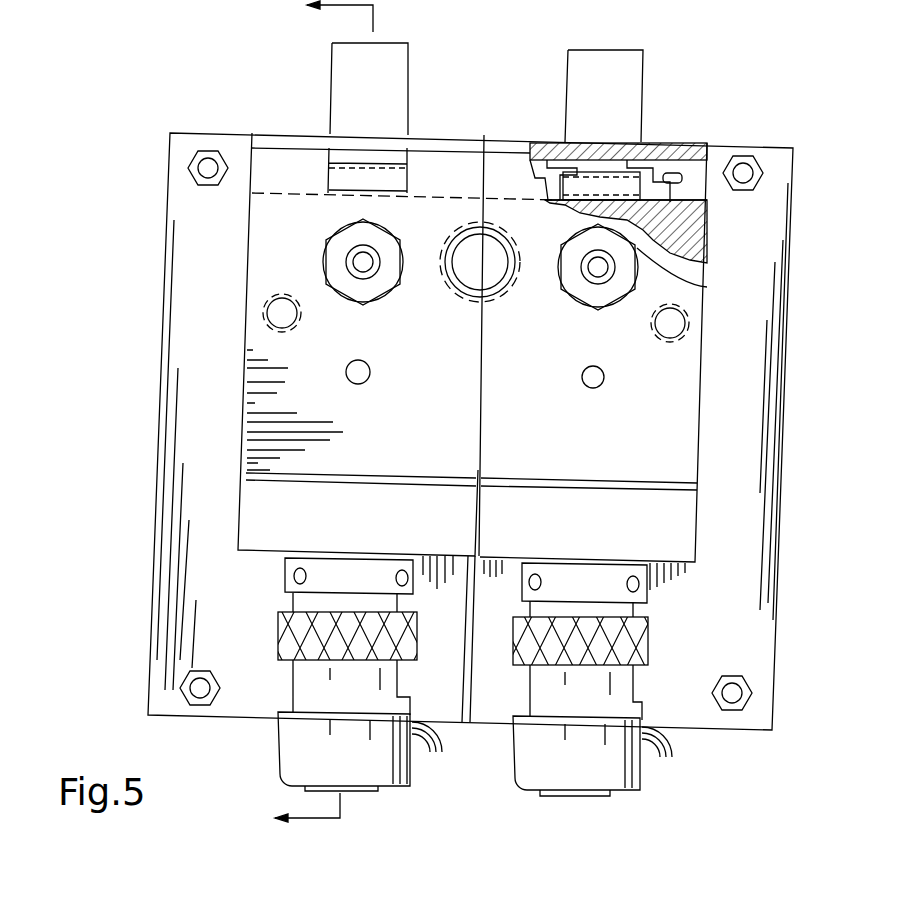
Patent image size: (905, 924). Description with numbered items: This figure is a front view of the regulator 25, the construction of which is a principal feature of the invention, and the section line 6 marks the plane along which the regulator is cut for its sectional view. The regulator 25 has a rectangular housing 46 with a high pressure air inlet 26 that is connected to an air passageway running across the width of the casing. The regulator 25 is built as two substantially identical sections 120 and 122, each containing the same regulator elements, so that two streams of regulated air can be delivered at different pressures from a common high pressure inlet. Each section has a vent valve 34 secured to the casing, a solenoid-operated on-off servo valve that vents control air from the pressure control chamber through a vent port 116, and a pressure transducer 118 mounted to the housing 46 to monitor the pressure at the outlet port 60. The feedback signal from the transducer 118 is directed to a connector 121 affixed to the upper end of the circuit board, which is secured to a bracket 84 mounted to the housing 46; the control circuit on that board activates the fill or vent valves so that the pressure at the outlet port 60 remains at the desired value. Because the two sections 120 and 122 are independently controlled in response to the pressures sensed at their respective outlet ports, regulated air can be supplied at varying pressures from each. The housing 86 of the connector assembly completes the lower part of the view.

The section line 6- 6 is at (311, 416).
The regulator 25 is at (135, 152).
The high pressure air inlet 26 is at (457, 238).
The vent valve 34 is at (382, 770).
The rectangular housing 46 is at (703, 355).
The outlet port 60 is at (340, 275).
The bracket 84 is at (763, 223).
The connector cap 86 is at (297, 743).
The vent port 116 is at (360, 375).
The pressure transducer 118 is at (347, 178).
The regulator section 120 is at (267, 283).
The connector 121 is at (370, 97).
The regulator section 122 is at (668, 388).